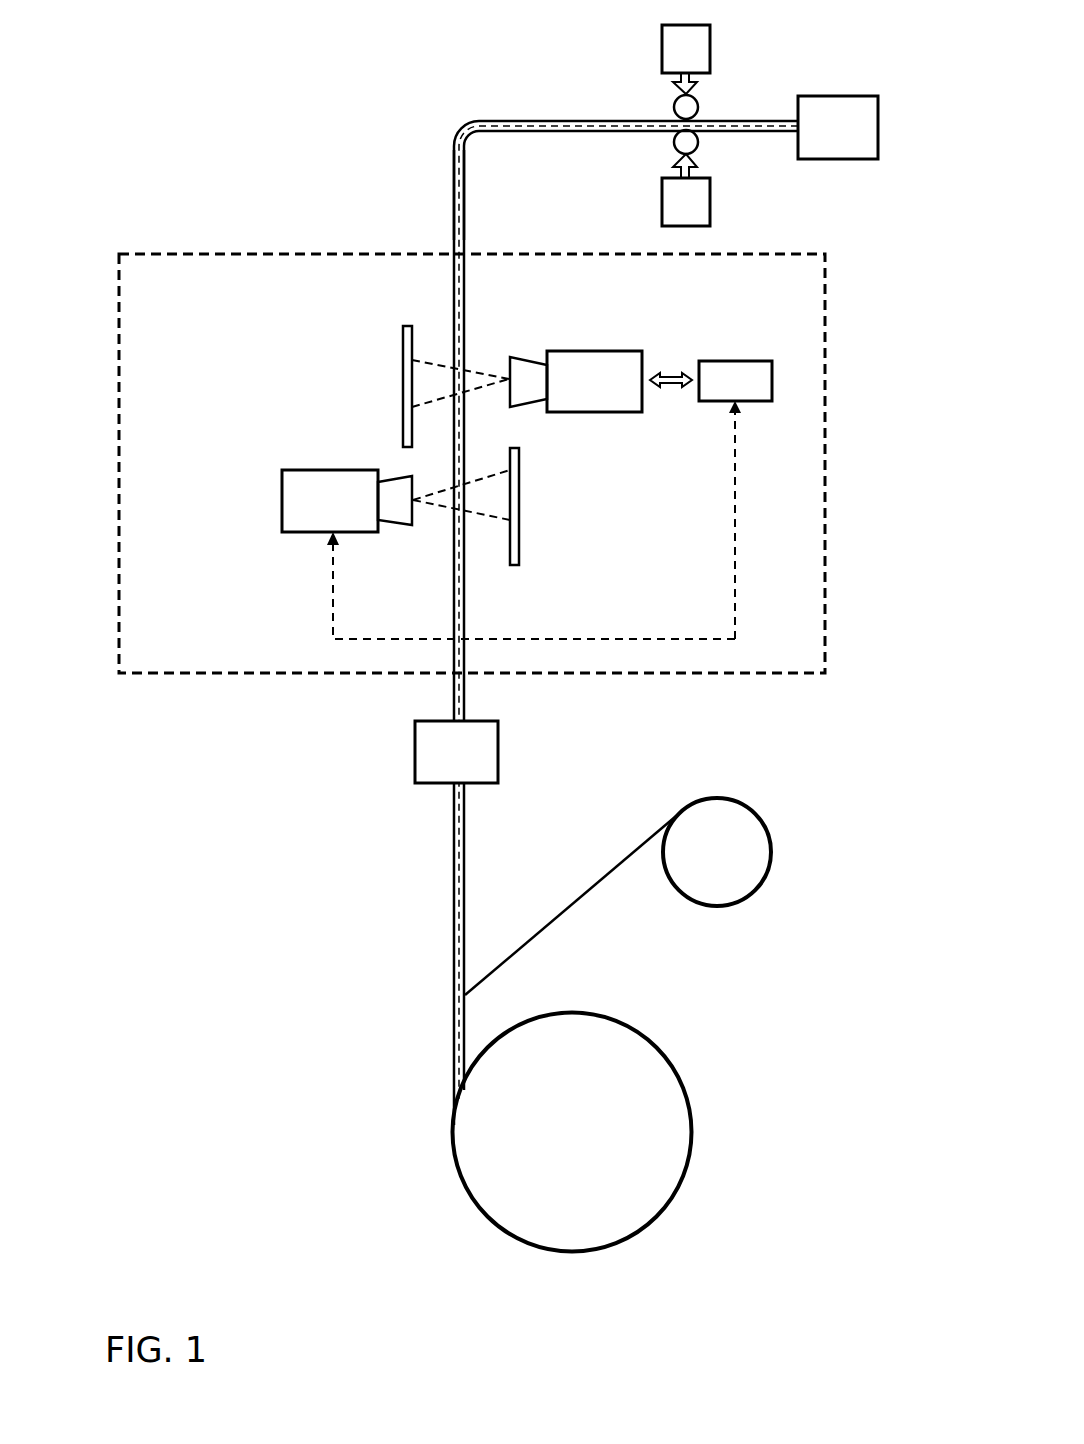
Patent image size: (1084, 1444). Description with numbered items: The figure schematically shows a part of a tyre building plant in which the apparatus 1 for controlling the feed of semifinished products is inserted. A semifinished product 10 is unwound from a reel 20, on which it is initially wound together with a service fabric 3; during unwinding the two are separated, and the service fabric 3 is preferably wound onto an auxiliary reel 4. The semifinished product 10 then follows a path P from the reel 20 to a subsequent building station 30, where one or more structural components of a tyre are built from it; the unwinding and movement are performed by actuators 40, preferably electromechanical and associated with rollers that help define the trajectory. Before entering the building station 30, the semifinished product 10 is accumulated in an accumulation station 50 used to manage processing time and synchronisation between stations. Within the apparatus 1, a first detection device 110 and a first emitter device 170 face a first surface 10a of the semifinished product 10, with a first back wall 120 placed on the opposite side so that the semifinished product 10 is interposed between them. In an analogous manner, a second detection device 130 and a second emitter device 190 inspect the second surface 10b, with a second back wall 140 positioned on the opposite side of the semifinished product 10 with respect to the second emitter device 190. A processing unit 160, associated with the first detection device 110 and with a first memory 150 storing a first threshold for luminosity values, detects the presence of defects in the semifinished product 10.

The apparatus 1 is at (849, 315).
The service fabric 3 is at (557, 917).
The auxiliary reel 4 is at (765, 823).
The semifinished product 10 is at (453, 899).
The first surface 10a is at (465, 218).
The second surface 10b is at (453, 200).
The reel 20 is at (637, 1103).
The building station 30 is at (838, 127).
The actuators 40 is at (660, 53).
The accumulation station 50 is at (456, 752).
The first detection device 110 is at (579, 340).
The first emitter device 170 is at (588, 351).
The first back wall 120 is at (403, 396).
The second detection device 130 is at (272, 488).
The second emitter device 190 is at (282, 492).
The second back wall 140 is at (519, 505).
The first memory 150 is at (562, 455).
The processing unit 160 is at (737, 361).
The path P is at (453, 160).